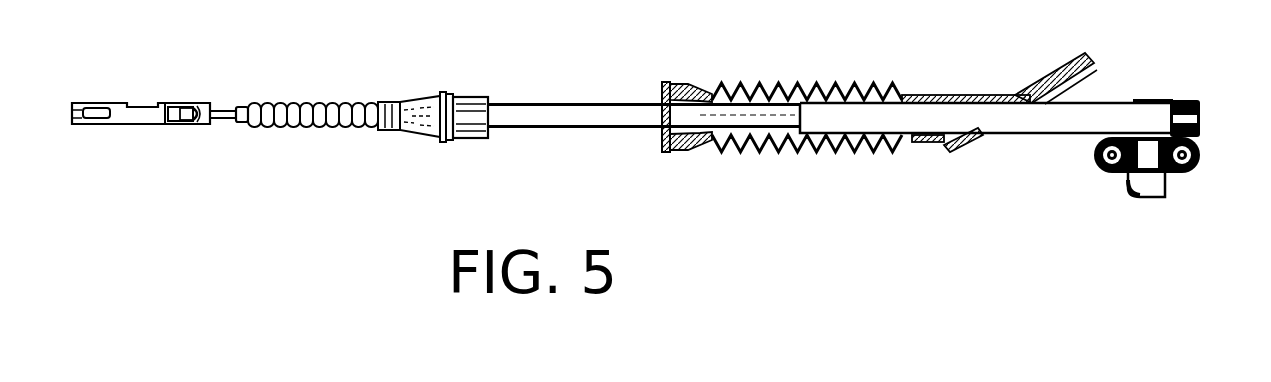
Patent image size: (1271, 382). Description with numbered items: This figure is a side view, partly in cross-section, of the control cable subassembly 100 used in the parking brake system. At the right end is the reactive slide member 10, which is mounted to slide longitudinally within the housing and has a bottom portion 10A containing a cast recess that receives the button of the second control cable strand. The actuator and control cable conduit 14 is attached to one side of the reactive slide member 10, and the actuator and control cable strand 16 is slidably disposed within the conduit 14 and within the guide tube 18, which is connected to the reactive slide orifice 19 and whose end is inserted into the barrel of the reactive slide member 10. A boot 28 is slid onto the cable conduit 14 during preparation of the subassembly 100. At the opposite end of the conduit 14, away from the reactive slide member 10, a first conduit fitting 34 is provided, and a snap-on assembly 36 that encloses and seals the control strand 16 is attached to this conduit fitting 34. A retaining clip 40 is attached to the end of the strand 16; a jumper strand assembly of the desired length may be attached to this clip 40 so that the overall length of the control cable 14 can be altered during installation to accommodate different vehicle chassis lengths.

The reactive slide member 10 is at (1185, 99).
The bottom portion of the reactive slide member 10A is at (1130, 186).
The actuator and control cable conduit 14 is at (570, 104).
The actuator and control cable strand 16 is at (236, 69).
The guide tube 18 is at (1095, 103).
The reactive slide orifice 19 is at (1138, 100).
The boot 28 is at (953, 95).
The first conduit fitting 34 is at (460, 93).
The snap-on assembly 36 is at (297, 103).
The retaining clip 40 is at (174, 69).
The control cable subassembly 100 is at (677, 157).